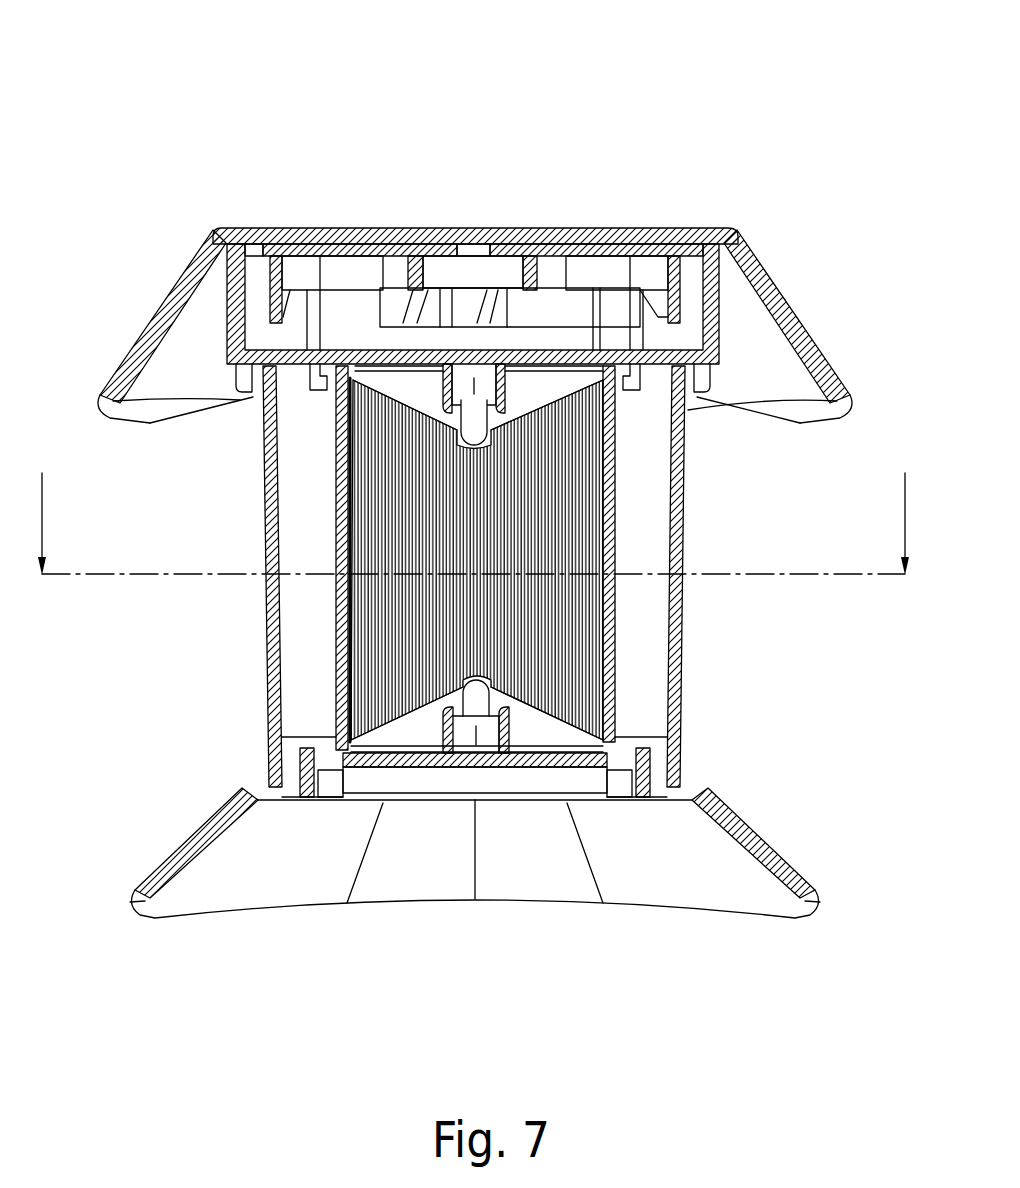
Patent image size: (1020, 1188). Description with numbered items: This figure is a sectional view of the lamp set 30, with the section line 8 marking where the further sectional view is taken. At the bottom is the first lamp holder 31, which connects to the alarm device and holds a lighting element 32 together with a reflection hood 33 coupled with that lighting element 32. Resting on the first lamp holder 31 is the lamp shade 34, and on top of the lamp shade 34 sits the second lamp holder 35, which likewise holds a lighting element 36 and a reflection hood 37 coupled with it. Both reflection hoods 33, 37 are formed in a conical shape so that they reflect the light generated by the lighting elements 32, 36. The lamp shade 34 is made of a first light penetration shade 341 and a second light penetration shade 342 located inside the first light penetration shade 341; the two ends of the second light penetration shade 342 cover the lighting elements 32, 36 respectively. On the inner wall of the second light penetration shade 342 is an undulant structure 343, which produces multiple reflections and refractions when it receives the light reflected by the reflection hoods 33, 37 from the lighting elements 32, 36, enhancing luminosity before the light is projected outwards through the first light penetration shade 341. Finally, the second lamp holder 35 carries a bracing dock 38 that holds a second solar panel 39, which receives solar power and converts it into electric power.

The lamp set 30 is at (656, 124).
The first lamp holder 31 is at (185, 860).
The lighting element 32 is at (478, 700).
The reflection hood 33 is at (423, 722).
The lamp shade 34 is at (796, 594).
The first light penetration shade 341 is at (684, 624).
The second light penetration shade 342 is at (612, 695).
The undulant structure 343 is at (372, 668).
The second lamp holder 35 is at (237, 290).
The lighting element 36 is at (458, 432).
The reflection hood 37 is at (528, 393).
The bracing dock 38 is at (755, 285).
The second solar panel 39 is at (356, 240).
The section line 8- 8 is at (473, 505).